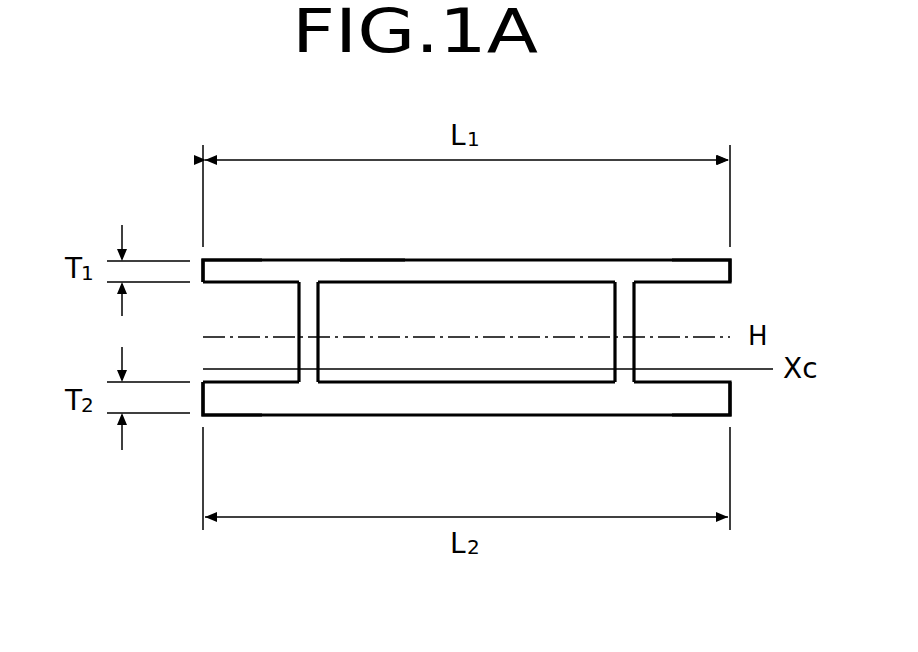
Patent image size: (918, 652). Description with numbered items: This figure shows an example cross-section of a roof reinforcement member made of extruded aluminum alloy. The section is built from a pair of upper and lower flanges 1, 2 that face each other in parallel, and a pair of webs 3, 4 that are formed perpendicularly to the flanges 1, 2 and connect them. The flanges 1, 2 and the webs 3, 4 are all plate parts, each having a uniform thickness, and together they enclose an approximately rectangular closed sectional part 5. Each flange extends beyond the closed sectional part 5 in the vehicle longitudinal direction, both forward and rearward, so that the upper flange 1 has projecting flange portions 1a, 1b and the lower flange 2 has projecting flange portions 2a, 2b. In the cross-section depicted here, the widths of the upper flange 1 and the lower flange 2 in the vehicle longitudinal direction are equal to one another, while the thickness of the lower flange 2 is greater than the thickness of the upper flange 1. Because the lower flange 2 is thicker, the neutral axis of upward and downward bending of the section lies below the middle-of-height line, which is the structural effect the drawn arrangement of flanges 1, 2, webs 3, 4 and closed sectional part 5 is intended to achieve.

The upper flange 1 is at (490, 272).
The projecting flange portion 1a is at (247, 272).
The projecting flange portion 1b is at (680, 275).
The lower flange 2 is at (478, 402).
The projecting flange portion 2a is at (245, 403).
The projecting flange portion 2b is at (677, 403).
The web 3 is at (304, 307).
The web 4 is at (623, 307).
The closed sectional part 5 is at (373, 258).